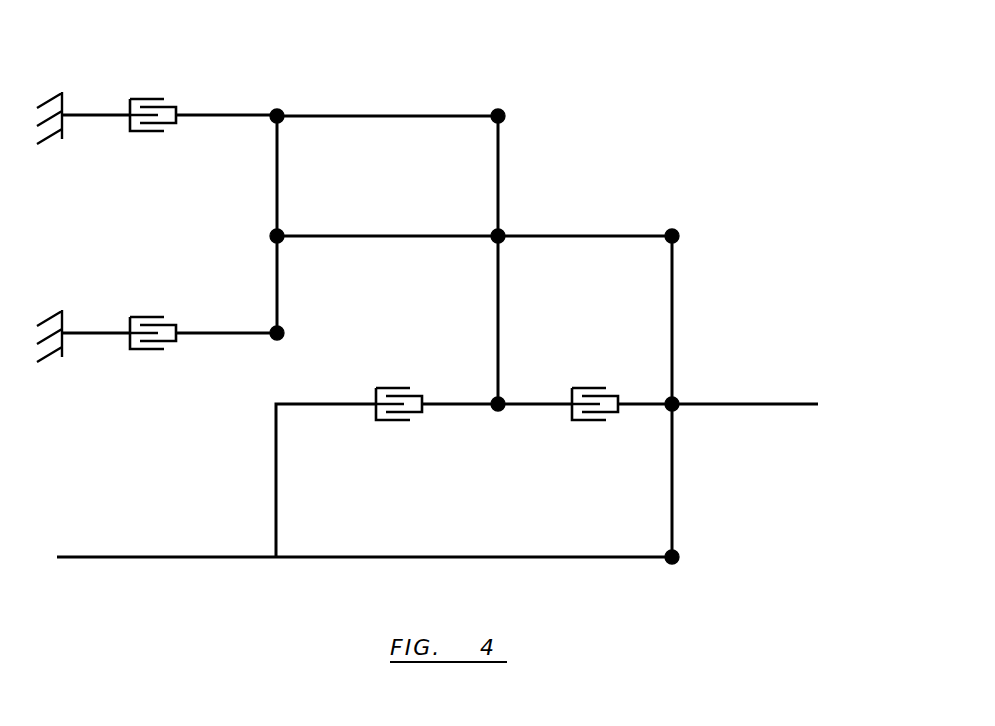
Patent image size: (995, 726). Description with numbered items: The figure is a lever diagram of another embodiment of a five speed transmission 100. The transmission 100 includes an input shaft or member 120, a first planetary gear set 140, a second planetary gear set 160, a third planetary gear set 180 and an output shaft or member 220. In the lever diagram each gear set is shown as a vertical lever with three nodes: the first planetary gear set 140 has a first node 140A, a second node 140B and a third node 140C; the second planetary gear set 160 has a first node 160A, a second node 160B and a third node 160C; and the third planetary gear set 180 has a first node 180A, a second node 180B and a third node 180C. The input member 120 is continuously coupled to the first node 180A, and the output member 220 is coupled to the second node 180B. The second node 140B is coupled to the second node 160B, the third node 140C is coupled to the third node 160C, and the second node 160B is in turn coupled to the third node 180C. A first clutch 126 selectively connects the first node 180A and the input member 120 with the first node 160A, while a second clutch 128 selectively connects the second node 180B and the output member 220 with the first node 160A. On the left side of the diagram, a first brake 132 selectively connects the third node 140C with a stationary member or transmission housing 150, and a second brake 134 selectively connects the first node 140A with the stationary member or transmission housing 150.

The transmission 100 is at (416, 339).
The input shaft or member 120 is at (123, 560).
The first clutch 126 is at (392, 424).
The second clutch 128 is at (590, 425).
The first brake 132 is at (147, 133).
The second brake 134 is at (147, 352).
The first planetary gear set 140 is at (278, 186).
The first node 140A is at (282, 330).
The second node 140B is at (272, 238).
The third node 140C is at (275, 113).
The stationary member or transmission housing 150 is at (43, 143).
The second planetary gear set 160 is at (528, 255).
The first node 160A is at (490, 412).
The second node 160B is at (503, 241).
The third node 160C is at (502, 113).
The third planetary gear set 180 is at (720, 427).
The first node 180A is at (679, 572).
The second node 180B is at (677, 410).
The third node 180C is at (678, 233).
The output shaft or member 220 is at (732, 402).